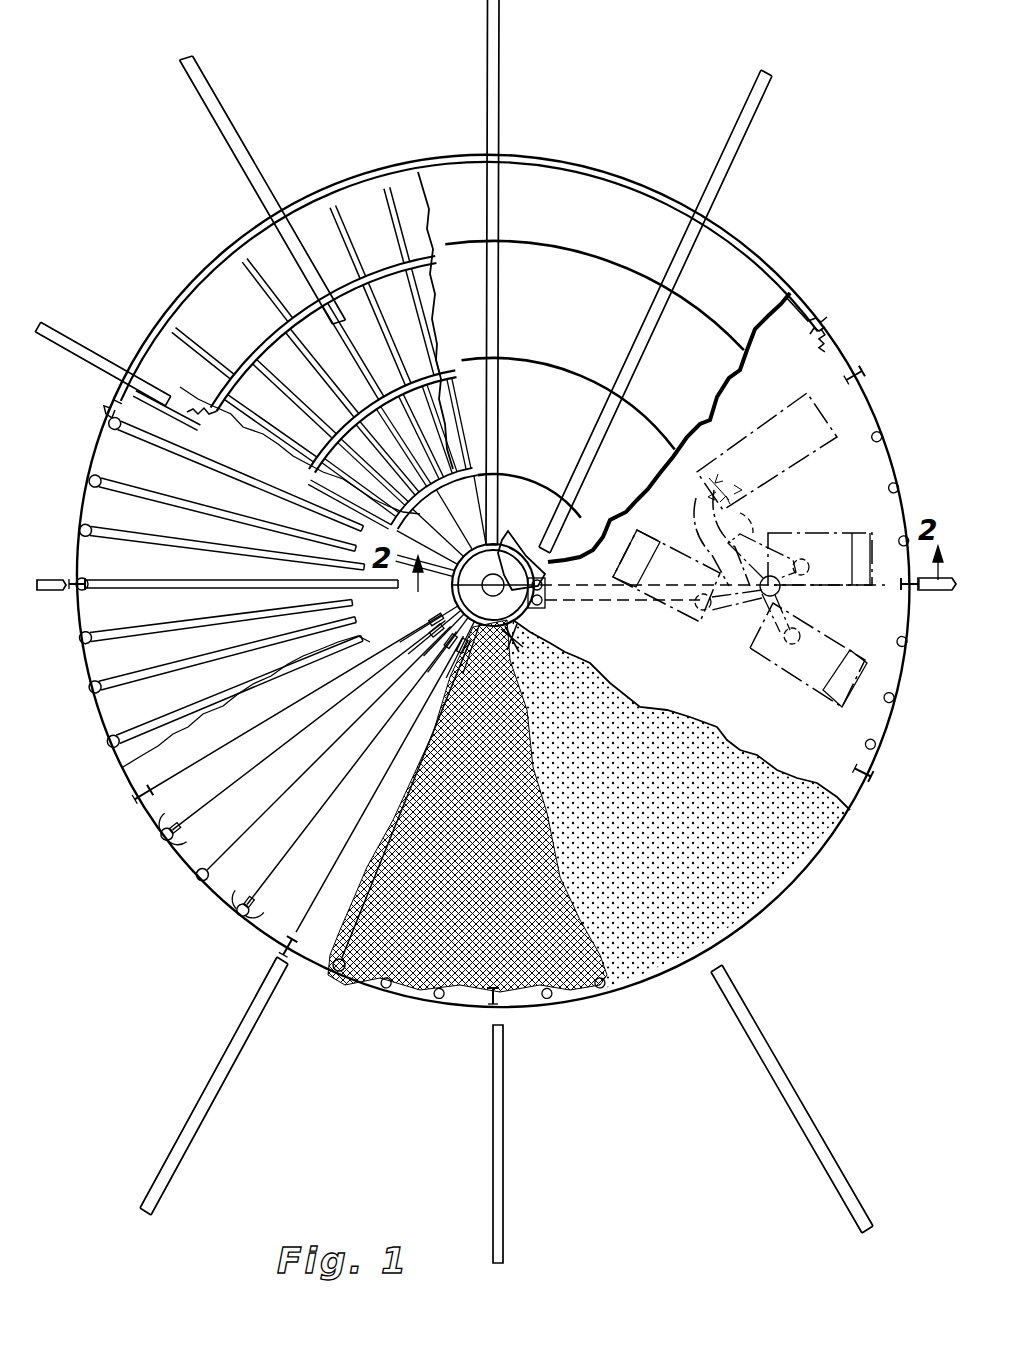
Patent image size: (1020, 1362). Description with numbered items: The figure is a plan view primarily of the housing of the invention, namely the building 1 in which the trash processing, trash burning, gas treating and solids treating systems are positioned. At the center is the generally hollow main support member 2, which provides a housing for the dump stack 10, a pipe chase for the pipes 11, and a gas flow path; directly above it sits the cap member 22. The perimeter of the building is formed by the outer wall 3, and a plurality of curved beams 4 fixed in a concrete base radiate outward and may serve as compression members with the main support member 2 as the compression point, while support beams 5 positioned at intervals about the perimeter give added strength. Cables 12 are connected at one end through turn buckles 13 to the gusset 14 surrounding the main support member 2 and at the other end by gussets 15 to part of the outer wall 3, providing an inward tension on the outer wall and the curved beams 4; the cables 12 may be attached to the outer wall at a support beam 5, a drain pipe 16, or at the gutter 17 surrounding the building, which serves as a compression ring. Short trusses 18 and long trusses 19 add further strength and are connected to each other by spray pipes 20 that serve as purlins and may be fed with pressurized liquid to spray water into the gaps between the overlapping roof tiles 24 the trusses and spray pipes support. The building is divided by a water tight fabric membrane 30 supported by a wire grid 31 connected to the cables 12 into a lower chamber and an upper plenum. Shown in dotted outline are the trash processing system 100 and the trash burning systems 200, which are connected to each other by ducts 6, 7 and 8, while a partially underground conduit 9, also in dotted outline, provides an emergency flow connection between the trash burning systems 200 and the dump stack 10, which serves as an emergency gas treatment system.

The building 1 is at (588, 136).
The main support member 2 is at (493, 557).
The outer wall 3 is at (618, 166).
The curved beams 4 is at (500, 10).
The support beams 5 is at (475, 687).
The duct 6 is at (692, 518).
The duct 7 is at (752, 540).
The duct 8 is at (692, 580).
The partially underground conduit 9 is at (610, 593).
The dump stack 10 is at (548, 608).
The pipes 11 is at (560, 600).
The cables 12 is at (276, 694).
The turn buckles 13 is at (443, 578).
The gusset 14 is at (520, 642).
The gussets 15 is at (196, 876).
The drain pipe 16 is at (511, 683).
The gutter 17 is at (287, 333).
The short trusses 18 is at (317, 254).
The long trusses 19 is at (183, 375).
The spray pipes 20 is at (362, 448).
The cap member 22 is at (531, 550).
The roof tiles 24 is at (581, 346).
The fabric membrane 30 is at (667, 940).
The wire grid 31 is at (570, 978).
The trash processing system 100 is at (760, 427).
The trash burning systems 200 is at (834, 587).